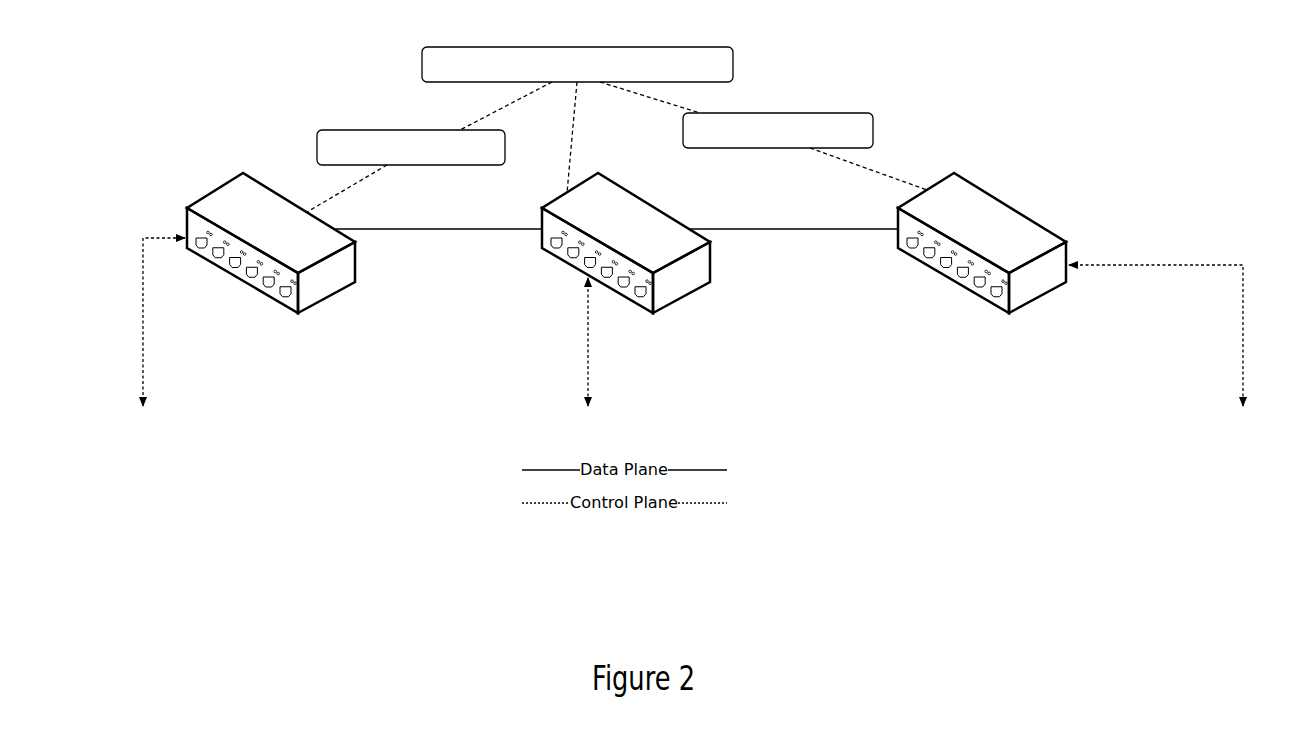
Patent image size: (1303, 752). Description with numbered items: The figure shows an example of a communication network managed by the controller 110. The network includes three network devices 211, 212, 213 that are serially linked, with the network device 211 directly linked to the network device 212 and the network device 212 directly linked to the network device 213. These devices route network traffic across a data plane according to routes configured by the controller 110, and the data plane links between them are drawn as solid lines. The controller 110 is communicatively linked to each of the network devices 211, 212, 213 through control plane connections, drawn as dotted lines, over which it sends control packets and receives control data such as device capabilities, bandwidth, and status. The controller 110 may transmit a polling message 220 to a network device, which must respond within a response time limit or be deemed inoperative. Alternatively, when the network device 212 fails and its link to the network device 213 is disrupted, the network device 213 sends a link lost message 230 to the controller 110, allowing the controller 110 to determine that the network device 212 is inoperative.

The controller 110 is at (718, 73).
The polling message 220 is at (492, 156).
The link lost message 230 is at (830, 140).
The network device 211 is at (323, 300).
The network device 212 is at (678, 300).
The network device 213 is at (1034, 300).